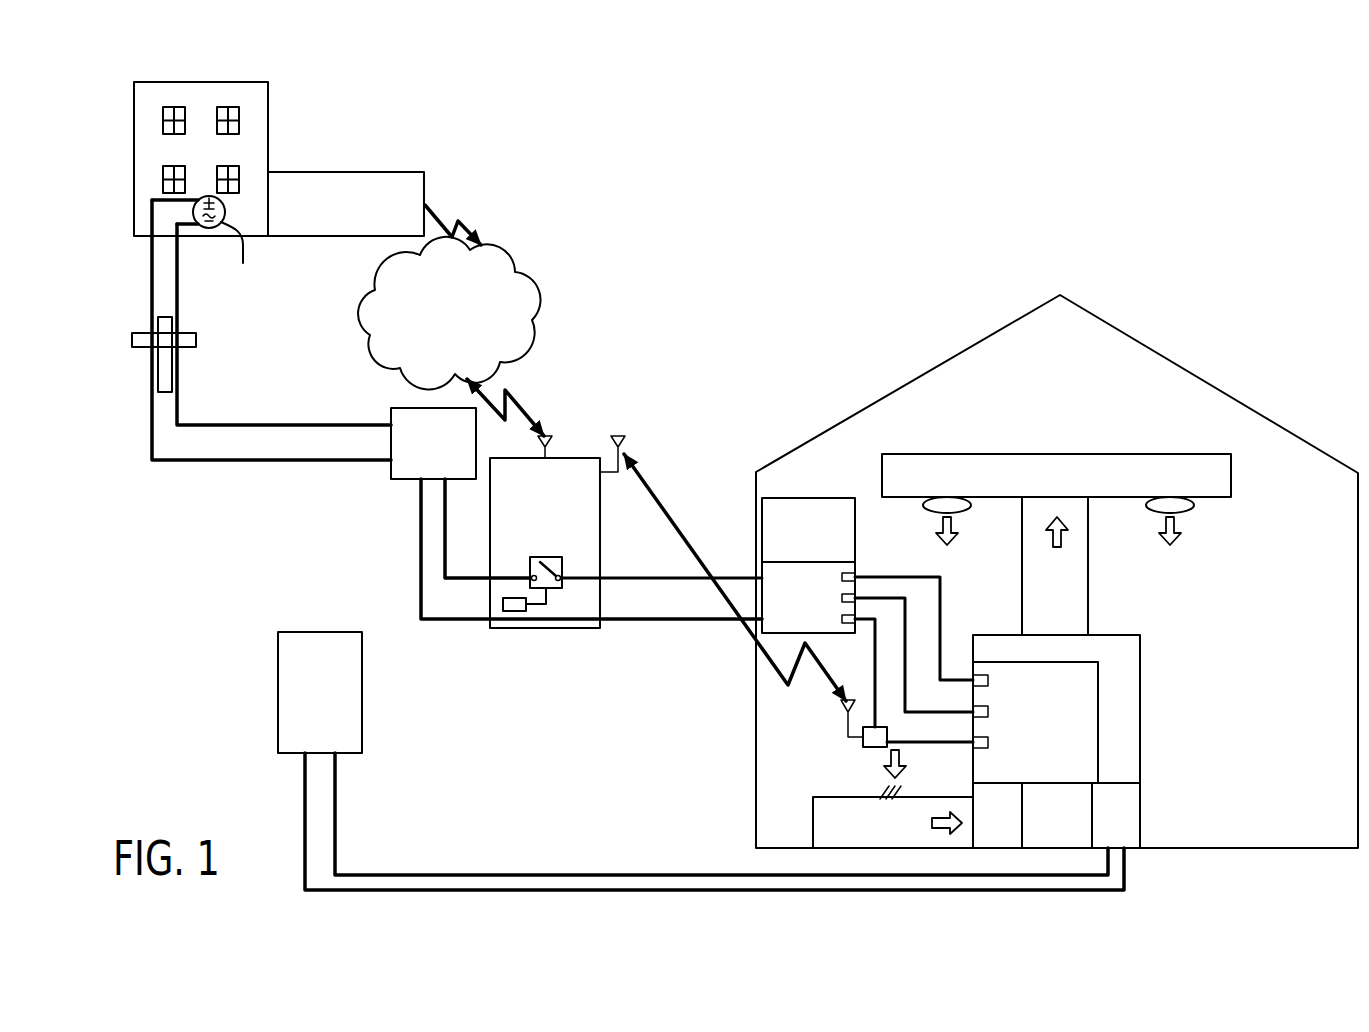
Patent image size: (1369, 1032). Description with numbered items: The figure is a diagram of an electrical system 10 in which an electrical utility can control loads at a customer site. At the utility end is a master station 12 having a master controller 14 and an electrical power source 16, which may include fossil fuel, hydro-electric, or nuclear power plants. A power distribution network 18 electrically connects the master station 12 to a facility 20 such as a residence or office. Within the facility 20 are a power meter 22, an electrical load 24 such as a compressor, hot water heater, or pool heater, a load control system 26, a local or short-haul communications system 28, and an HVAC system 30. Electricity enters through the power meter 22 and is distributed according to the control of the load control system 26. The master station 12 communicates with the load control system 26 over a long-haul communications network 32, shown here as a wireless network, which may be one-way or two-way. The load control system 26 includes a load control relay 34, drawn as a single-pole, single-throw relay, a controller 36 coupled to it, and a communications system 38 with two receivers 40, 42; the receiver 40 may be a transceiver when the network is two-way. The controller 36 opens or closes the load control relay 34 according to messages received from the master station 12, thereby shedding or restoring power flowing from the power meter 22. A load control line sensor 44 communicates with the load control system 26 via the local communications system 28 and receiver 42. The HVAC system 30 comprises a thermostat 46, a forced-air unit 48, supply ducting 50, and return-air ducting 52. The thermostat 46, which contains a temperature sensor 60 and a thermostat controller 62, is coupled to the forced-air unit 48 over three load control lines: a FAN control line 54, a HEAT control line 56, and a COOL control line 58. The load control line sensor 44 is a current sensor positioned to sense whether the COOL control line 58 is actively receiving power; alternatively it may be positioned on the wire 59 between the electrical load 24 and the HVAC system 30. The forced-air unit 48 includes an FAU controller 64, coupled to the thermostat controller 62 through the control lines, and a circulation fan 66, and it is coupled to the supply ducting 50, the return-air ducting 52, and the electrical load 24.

The electrical system 10 is at (660, 331).
The master station 12 is at (350, 122).
The master controller 14 is at (425, 187).
The electrical power source 16 is at (204, 243).
The power distribution network 18 is at (201, 370).
The facility 20 is at (902, 370).
The power meter 22 is at (412, 408).
The electrical load 24 is at (320, 632).
The load control system 26 is at (545, 629).
The local communications system 28 is at (668, 507).
The HVAC system 30 is at (1123, 622).
The long-haul communications network 32 is at (520, 258).
The load control relay 34 is at (530, 573).
The controller 36 is at (513, 611).
The communications system 38 is at (580, 432).
The receiver 40 is at (540, 440).
The receiver 42 is at (620, 436).
The load control line sensor 44 is at (873, 748).
The thermostat 46 is at (762, 527).
The forced-air unit 48 is at (1140, 662).
The supply ducting 50 is at (1088, 566).
The return-air ducting 52 is at (813, 822).
The FAN control line 54 is at (940, 575).
The HEAT control line 56 is at (905, 614).
The COOL control line 58 is at (875, 651).
The wire 59 is at (530, 875).
The temperature sensor 60 is at (855, 528).
The thermostat controller 62 is at (783, 634).
The FAU controller 64 is at (1098, 723).
The circulation fan 66 is at (1092, 815).